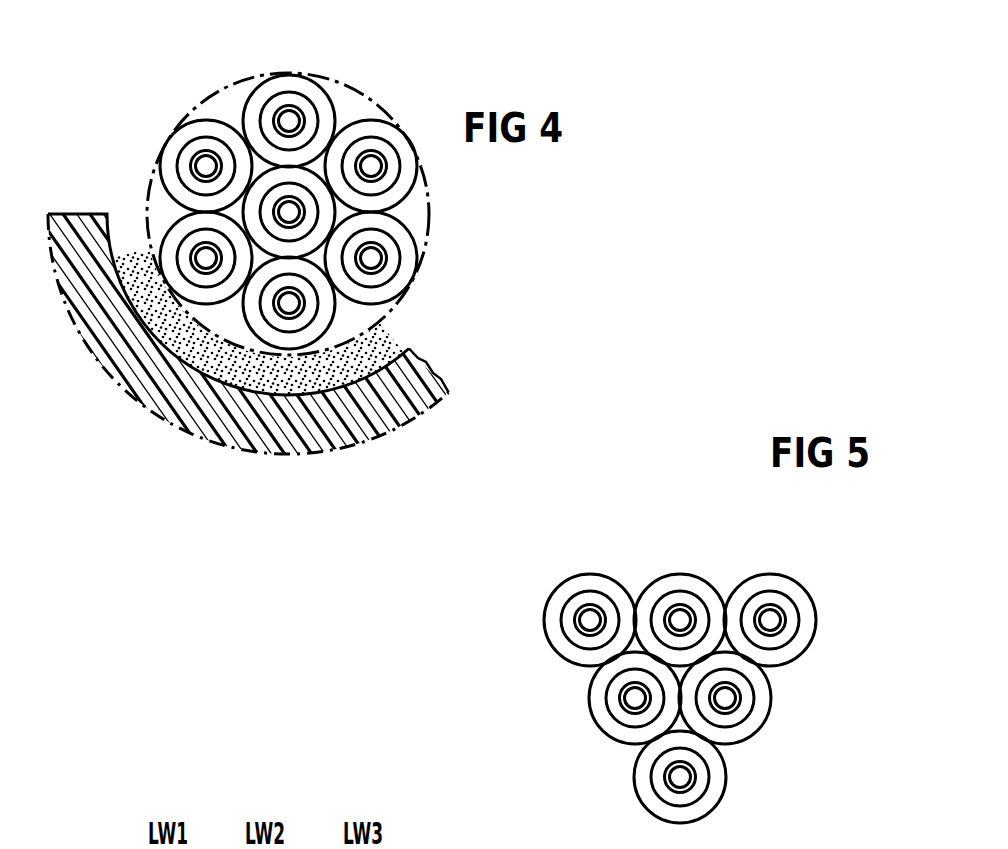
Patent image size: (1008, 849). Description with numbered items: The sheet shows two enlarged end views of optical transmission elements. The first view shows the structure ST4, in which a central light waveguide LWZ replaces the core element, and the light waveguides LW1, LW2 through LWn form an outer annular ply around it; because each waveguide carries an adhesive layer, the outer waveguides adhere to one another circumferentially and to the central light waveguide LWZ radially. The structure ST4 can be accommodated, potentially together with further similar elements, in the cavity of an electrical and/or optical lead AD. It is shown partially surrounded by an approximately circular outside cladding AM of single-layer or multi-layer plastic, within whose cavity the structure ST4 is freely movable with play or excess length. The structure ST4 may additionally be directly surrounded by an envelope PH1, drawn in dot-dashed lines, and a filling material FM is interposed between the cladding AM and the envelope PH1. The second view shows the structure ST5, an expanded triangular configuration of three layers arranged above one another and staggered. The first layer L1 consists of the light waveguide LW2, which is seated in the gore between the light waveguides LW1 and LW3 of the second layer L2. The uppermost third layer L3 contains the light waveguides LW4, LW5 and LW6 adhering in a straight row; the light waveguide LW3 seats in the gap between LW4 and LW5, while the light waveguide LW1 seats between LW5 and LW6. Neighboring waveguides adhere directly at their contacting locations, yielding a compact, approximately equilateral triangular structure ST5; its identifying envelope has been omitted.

In FIG. 4, the outside cladding AM is at (76, 228).
In FIG. 4, the filling material FM is at (130, 252).
In FIG. 4, the envelope PH1 is at (333, 80).
In FIG. 4, the light waveguide LW1 is at (273, 93).
In FIG. 5, the light waveguide LW1 is at (752, 701).
In FIG. 4, the light waveguide LW2 is at (378, 140).
In FIG. 5, the light waveguide LW2 is at (703, 795).
In FIG. 5, the light waveguide LW3 is at (620, 723).
In FIG. 5, the light waveguide LW4 is at (581, 590).
In FIG. 5, the light waveguide LW5 is at (671, 590).
In FIG. 5, the light waveguide LW6 is at (764, 590).
In FIG. 4, the light waveguide LWn is at (192, 130).
In FIG. 4, the central light waveguide LWZ is at (319, 213).
In FIG. 4, the structure ST4 is at (365, 326).
In FIG. 5, the structure ST5 is at (525, 662).
In FIG. 4, the electrical and/or optical lead AD is at (127, 435).
In FIG. 5, the first layer L1 is at (752, 777).
In FIG. 5, the second layer L2 is at (565, 698).
In FIG. 5, the third layer L3 is at (840, 620).